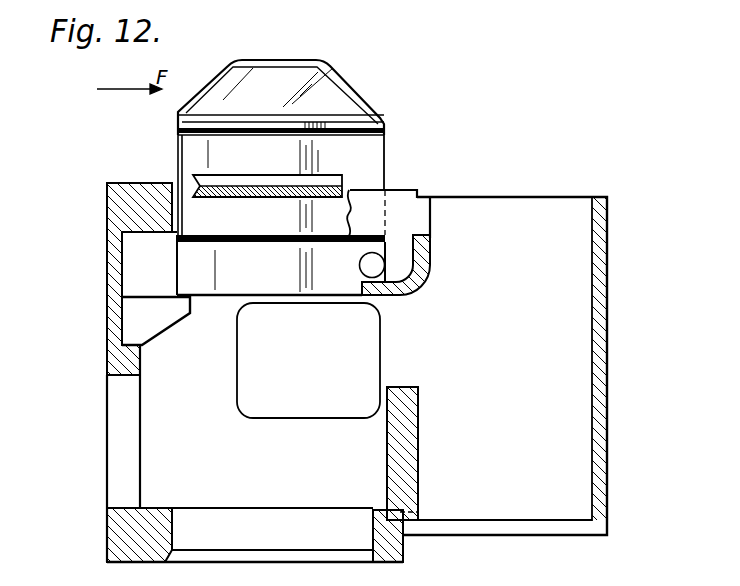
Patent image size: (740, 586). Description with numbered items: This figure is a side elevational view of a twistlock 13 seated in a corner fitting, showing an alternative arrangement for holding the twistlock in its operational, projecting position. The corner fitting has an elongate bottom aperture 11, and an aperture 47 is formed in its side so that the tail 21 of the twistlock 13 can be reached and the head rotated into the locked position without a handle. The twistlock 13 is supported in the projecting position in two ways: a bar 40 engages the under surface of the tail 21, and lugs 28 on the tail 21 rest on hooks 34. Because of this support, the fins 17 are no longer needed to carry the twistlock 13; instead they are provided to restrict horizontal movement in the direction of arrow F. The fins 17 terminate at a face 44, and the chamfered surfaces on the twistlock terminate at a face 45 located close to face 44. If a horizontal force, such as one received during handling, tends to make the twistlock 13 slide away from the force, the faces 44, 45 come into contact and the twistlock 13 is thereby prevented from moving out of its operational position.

The bottom aperture 11 is at (283, 523).
The twistlock 13 is at (347, 104).
The fins 17 is at (222, 182).
The tail 21 is at (262, 284).
The lugs 28 is at (365, 270).
The hooks 34 is at (172, 183).
The bar 40 is at (168, 315).
The face 44 is at (348, 191).
The face 45 is at (411, 189).
The aperture 47 is at (305, 412).